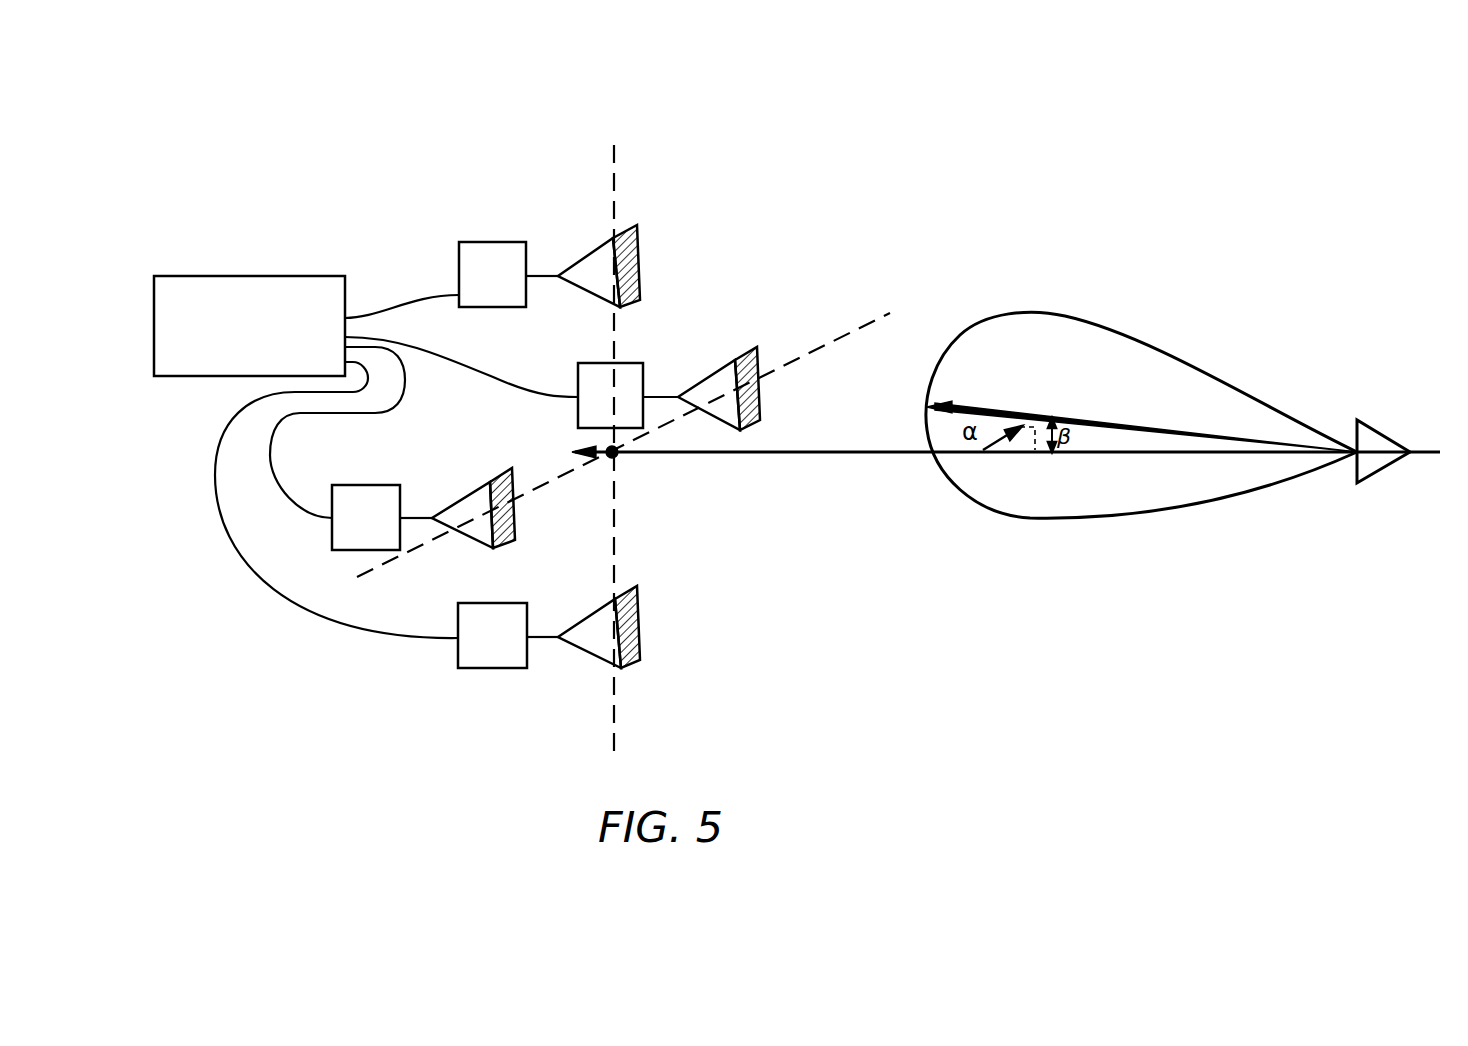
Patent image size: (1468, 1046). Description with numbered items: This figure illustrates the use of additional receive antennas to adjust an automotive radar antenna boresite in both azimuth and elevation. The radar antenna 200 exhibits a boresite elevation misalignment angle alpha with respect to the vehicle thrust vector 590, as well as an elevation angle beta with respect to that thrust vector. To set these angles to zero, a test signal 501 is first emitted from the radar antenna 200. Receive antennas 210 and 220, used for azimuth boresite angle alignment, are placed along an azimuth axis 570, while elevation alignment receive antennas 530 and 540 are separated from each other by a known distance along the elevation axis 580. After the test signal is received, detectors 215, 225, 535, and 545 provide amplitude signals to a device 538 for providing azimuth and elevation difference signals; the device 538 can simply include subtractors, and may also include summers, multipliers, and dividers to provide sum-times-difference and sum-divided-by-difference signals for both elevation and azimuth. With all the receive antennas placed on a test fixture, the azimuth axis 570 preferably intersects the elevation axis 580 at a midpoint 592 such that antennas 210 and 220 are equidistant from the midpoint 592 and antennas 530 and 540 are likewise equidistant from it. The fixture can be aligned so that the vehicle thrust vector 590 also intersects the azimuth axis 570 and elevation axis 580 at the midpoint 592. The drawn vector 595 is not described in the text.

The radar antenna 200 is at (1383, 428).
The receive antenna 210 is at (727, 362).
The detector 215 is at (578, 372).
The receive antenna 220 is at (487, 482).
The detector 225 is at (378, 482).
The test signal 501 is at (1187, 507).
The elevation alignment receive antenna 530 is at (593, 250).
The detector 535 is at (460, 262).
The device for providing azimuth and elevation difference signals 538 is at (260, 275).
The elevation alignment receive antenna 540 is at (642, 662).
The detector 545 is at (463, 668).
The azimuth axis 570 is at (808, 352).
The elevation axis 580 is at (617, 173).
The vehicle thrust vector 590 is at (825, 452).
The midpoint 592 is at (618, 457).
The target direction vector 595 is at (988, 410).